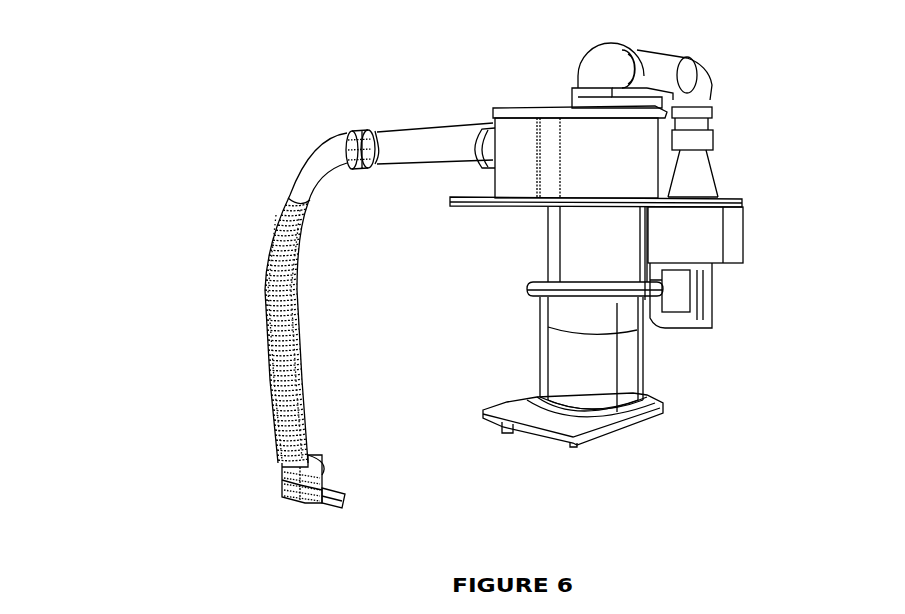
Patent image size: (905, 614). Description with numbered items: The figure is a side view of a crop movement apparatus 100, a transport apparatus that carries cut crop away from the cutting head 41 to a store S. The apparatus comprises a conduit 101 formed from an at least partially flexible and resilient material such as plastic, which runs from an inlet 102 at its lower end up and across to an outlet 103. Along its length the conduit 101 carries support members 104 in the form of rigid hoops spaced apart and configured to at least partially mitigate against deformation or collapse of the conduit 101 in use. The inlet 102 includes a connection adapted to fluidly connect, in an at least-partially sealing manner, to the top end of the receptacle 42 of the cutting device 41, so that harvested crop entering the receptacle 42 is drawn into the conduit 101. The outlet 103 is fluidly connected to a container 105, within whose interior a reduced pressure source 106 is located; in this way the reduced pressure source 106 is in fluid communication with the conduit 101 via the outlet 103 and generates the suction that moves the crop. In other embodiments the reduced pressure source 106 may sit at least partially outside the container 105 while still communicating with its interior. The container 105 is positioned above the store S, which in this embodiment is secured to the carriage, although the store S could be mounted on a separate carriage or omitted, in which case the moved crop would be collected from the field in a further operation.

The crop movement apparatus 100 is at (147, 65).
The conduit 101 is at (307, 153).
The inlet 102 is at (280, 462).
The outlet 103 is at (493, 130).
The support members 104 is at (367, 157).
The container 105 is at (650, 162).
The reduced pressure source 106 is at (621, 261).
The store S is at (560, 340).
The cutting head 41 is at (355, 494).
The receptacle 42 is at (283, 486).